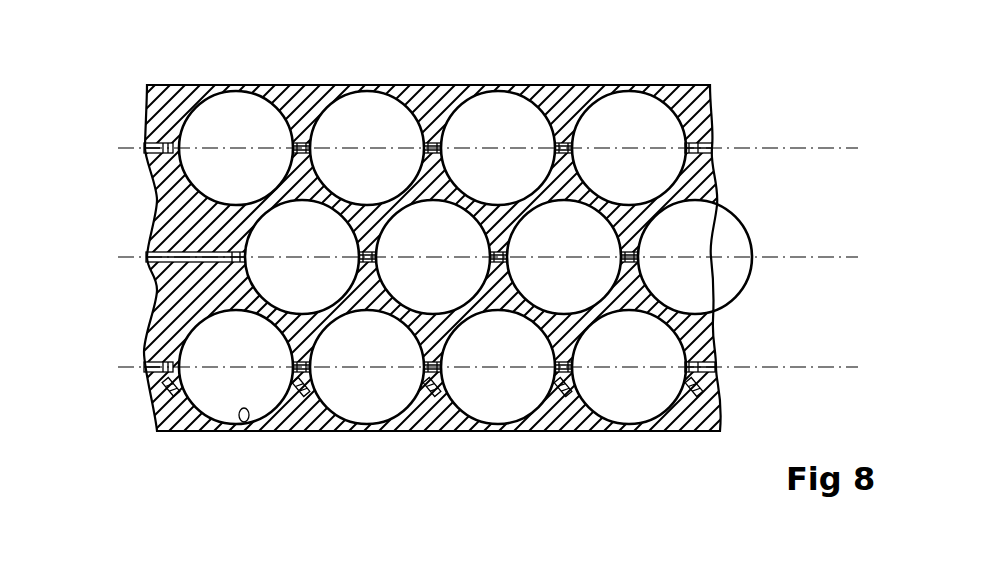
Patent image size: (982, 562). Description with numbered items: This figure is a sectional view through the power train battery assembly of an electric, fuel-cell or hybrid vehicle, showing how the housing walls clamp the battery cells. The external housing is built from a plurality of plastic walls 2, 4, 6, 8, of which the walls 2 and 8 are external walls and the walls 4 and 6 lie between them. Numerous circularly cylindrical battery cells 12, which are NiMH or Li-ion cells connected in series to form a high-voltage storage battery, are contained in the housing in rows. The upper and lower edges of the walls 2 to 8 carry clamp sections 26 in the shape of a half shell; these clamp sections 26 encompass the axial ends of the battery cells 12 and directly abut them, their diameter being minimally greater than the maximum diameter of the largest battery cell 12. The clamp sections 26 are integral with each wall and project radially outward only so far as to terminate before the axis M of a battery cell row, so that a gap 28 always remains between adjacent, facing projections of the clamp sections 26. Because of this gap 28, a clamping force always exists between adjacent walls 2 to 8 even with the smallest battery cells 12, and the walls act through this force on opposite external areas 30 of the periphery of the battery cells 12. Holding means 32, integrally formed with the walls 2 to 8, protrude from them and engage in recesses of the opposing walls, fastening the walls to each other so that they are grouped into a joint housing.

The external wall 2 is at (705, 406).
The wall 4 is at (705, 338).
The wall 6 is at (708, 187).
The external wall 8 is at (695, 118).
The battery cell 12 is at (237, 92).
The clamp section 26 is at (440, 183).
The gap 28 is at (147, 147).
The external area 30 is at (238, 313).
The holding means 32 is at (310, 88).
The axis M is at (843, 148).